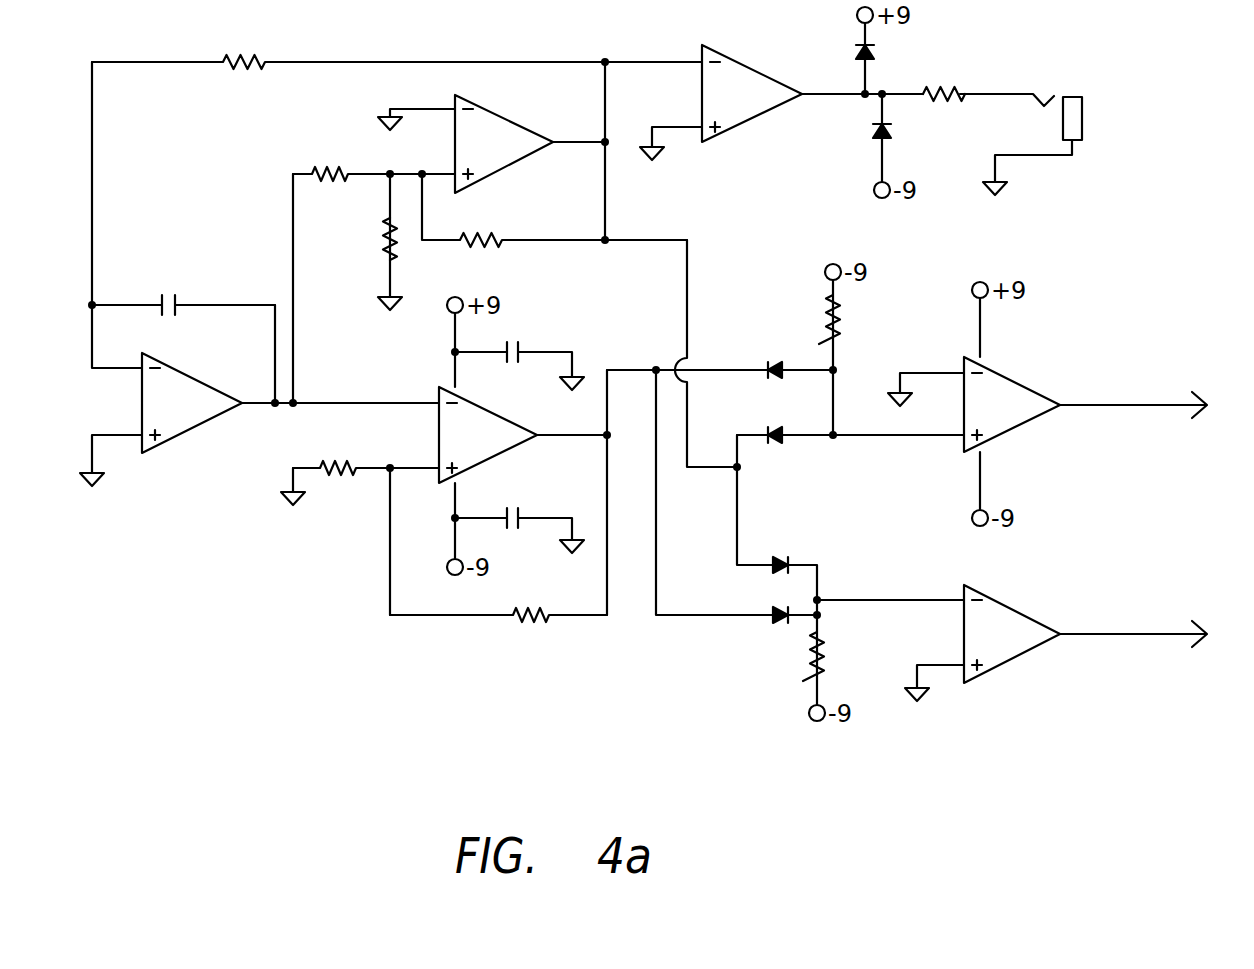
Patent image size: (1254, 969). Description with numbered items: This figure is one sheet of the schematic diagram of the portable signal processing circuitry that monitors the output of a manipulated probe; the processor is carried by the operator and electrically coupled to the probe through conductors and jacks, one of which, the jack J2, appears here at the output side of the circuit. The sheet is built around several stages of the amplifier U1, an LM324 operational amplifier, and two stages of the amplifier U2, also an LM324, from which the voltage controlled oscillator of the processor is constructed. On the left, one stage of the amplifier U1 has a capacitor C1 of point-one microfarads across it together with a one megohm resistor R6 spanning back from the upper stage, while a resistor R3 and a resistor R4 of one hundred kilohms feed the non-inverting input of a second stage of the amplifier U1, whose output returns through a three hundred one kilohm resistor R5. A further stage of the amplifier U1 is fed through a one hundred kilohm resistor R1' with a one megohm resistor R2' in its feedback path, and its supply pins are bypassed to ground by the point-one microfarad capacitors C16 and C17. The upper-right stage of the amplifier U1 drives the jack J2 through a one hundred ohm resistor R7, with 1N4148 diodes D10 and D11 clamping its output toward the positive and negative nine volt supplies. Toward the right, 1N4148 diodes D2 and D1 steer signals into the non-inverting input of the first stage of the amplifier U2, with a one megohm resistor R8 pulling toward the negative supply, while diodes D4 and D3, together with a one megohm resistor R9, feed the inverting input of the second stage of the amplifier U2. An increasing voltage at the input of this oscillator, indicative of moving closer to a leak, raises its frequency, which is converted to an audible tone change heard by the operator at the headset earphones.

The resistor R6 is at (397, 48).
The resistor R3 is at (374, 159).
The resistor R4 is at (371, 239).
The resistor R5 is at (554, 210).
The resistor R7 is at (943, 79).
The resistor R8 is at (816, 319).
The resistor R9 is at (798, 656).
The resistor R1' is at (366, 456).
The resistor R2' is at (498, 601).
The capacitor C1 is at (183, 293).
The capacitor C16 is at (519, 349).
The capacitor C17 is at (519, 514).
The diode D1 is at (782, 421).
The diode D2 is at (774, 354).
The diode D3 is at (764, 603).
The diode D4 is at (782, 550).
The diode D10 is at (840, 53).
The diode D11 is at (860, 130).
The jack J2 is at (1051, 122).
The amplifier U1 is at (472, 264).
The amplifier U2 is at (1012, 520).